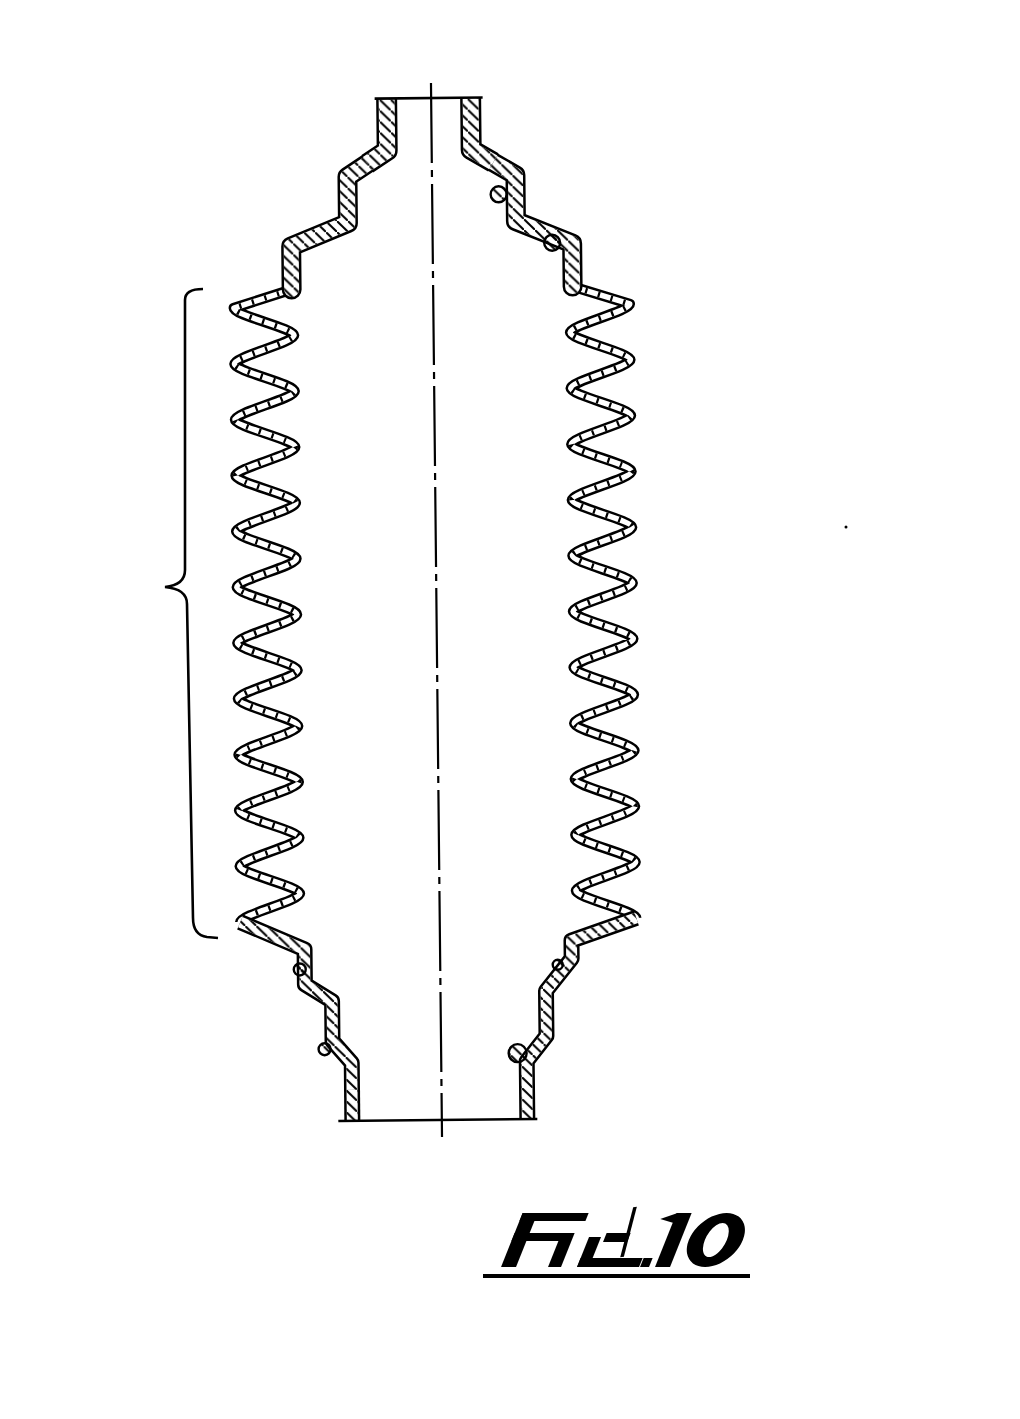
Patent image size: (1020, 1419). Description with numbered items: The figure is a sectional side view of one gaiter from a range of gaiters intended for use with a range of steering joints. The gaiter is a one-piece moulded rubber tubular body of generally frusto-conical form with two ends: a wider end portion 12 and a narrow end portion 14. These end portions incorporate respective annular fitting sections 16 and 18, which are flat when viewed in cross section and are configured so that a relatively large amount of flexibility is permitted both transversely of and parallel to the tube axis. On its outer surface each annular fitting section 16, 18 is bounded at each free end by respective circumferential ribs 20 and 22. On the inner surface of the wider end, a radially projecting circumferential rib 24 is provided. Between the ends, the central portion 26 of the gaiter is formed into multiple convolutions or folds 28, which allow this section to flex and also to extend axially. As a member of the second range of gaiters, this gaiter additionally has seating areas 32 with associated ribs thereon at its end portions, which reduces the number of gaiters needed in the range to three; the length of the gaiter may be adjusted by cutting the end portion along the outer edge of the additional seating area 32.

The wider end portion 12 is at (373, 1136).
The narrow end portion 14 is at (473, 75).
The annular fitting section 16 is at (343, 1097).
The annular fitting section 18 is at (378, 127).
The circumferential rib 20 is at (580, 980).
The circumferential rib 22 is at (483, 100).
The radially projecting circumferential rib 24 is at (509, 206).
The central portion 26 is at (163, 587).
The convolutions or folds 28 is at (632, 305).
The additional seating area 32 is at (338, 197).